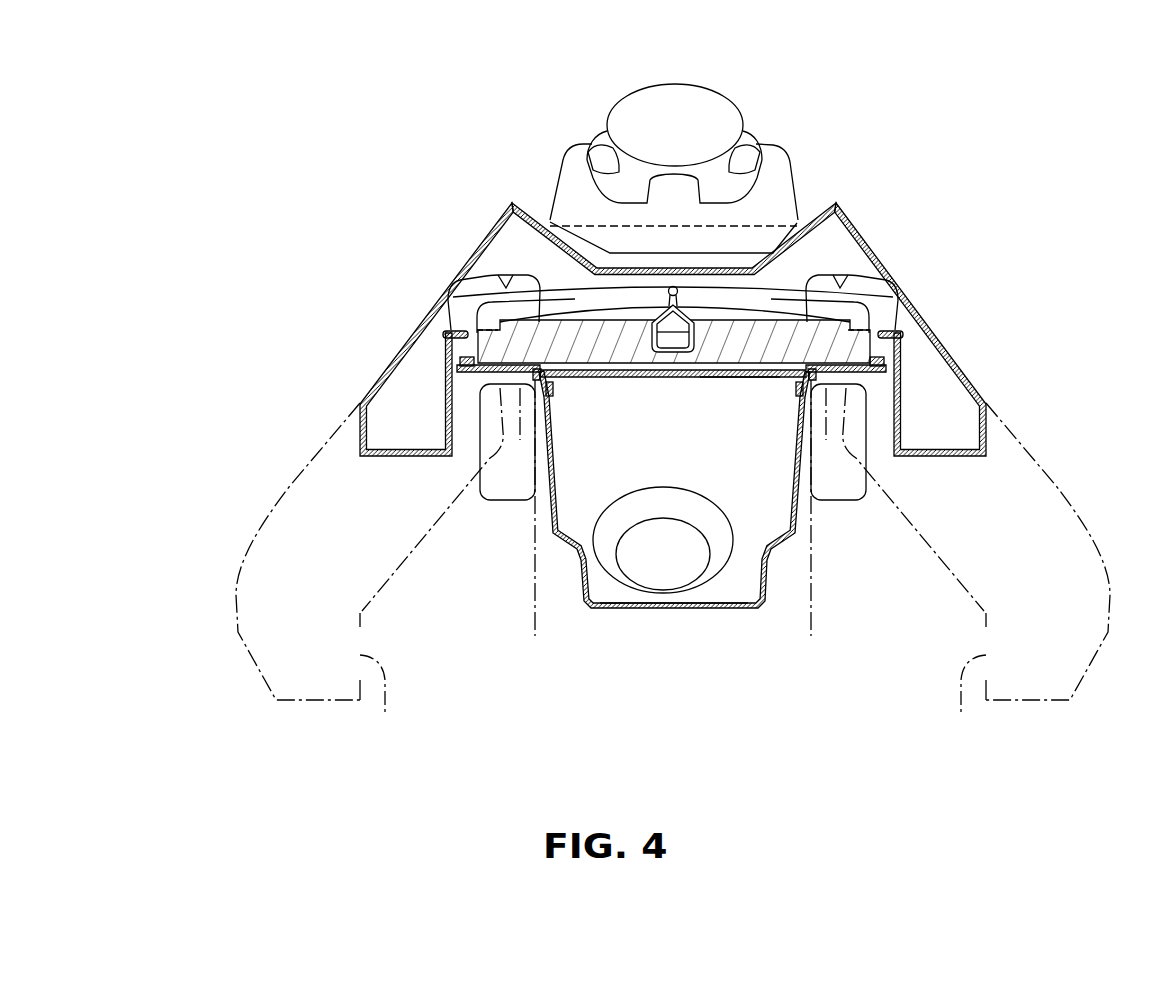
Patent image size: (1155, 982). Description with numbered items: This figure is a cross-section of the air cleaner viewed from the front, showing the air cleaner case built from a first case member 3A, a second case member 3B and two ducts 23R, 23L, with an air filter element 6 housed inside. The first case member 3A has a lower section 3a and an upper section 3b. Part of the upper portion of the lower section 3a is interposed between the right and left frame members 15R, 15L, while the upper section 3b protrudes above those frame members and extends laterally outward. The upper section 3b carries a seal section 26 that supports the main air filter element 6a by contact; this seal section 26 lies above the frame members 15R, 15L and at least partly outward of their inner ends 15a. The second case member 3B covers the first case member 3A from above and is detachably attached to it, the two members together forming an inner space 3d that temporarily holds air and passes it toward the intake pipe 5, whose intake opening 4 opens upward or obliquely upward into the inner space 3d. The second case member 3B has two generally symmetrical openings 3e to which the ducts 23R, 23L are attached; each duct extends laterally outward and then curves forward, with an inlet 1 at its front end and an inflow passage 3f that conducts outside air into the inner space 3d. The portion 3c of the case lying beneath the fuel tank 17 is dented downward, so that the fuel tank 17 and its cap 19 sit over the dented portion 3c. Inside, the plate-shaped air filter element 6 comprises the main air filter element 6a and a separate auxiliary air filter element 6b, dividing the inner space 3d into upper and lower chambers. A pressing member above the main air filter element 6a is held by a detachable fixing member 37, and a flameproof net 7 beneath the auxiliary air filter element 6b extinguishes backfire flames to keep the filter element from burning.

The inlet 1 is at (673, 679).
The first case member 3A is at (674, 544).
The second case member 3B is at (888, 267).
The lower section 3a is at (727, 607).
The upper section 3b is at (793, 560).
The downwardly dented portion 3c is at (606, 268).
The inner space 3d is at (688, 433).
The opening 3e is at (503, 287).
The inflow passage 3f is at (456, 295).
The intake opening 4 is at (663, 578).
The intake pipe 5 is at (697, 568).
The air filter element 6 is at (753, 342).
The main air filter element 6a is at (868, 308).
The auxiliary air filter element 6b is at (884, 340).
The flameproof net 7 is at (740, 379).
The right frame member 15R is at (505, 503).
The left frame member 15L is at (841, 503).
The inner end 15a is at (673, 525).
The fuel tank 17 is at (780, 172).
The cap 19 is at (710, 103).
The right duct 23R is at (290, 488).
The left duct 23L is at (1056, 488).
The seal section 26 is at (500, 393).
The fixing member 37 is at (640, 372).